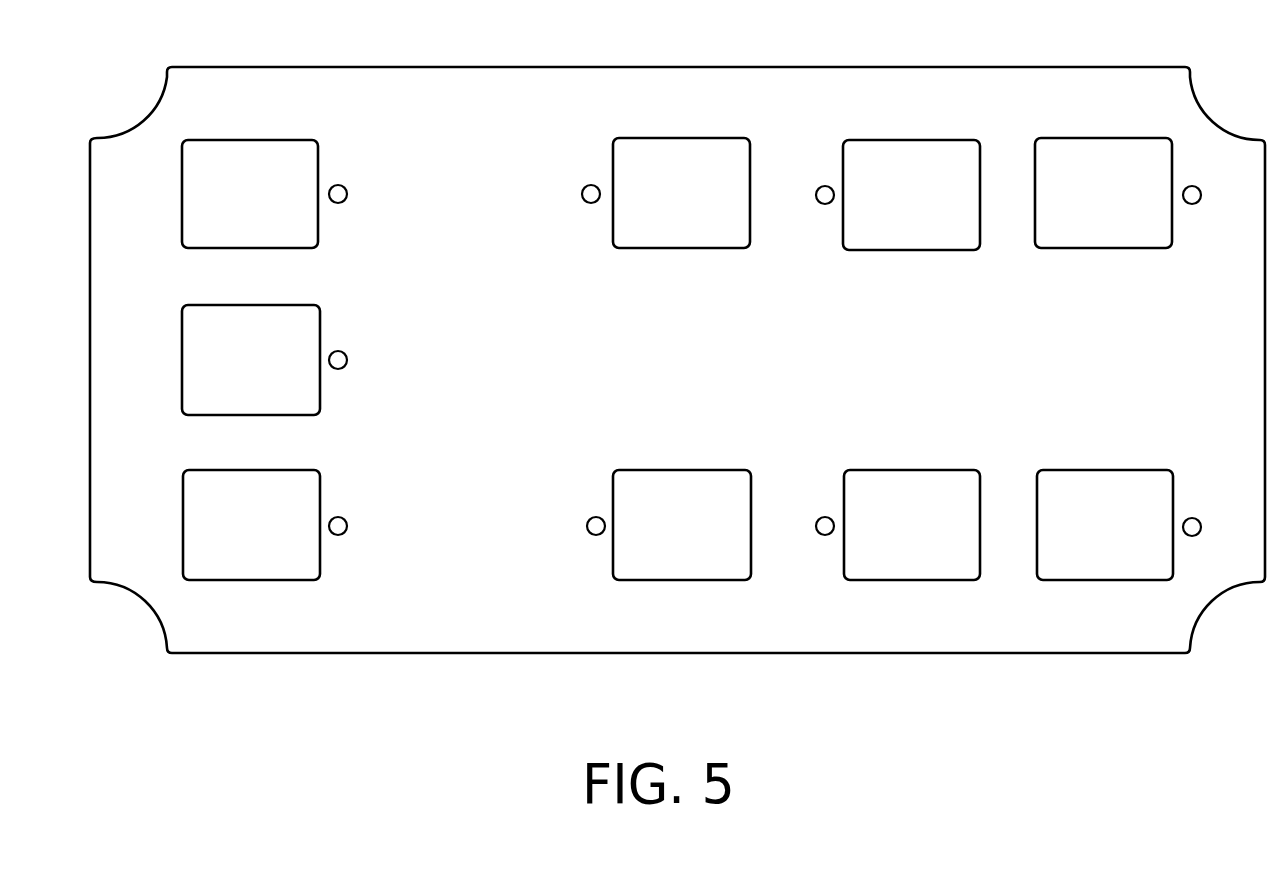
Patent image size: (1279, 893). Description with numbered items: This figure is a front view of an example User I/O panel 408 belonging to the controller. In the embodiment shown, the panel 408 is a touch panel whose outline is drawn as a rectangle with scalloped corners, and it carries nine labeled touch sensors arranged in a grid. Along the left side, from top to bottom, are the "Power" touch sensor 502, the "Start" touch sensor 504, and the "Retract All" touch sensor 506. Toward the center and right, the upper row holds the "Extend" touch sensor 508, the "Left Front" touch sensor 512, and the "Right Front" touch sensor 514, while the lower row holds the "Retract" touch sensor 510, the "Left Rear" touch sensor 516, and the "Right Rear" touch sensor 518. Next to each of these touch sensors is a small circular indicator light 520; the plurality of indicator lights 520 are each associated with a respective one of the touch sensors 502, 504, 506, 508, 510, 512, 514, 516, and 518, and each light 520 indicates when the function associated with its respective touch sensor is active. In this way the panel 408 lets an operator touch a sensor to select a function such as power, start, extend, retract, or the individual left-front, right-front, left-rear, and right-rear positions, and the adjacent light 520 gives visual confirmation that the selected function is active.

The User I/O panel 408 is at (127, 104).
The "Power" touch sensor 502 is at (182, 195).
The "Start" touch sensor 504 is at (182, 358).
The "Retract All" touch sensor 506 is at (183, 525).
The "Extend" touch sensor 508 is at (677, 248).
The "Retract" touch sensor 510 is at (678, 470).
The "Left Front" touch sensor 512 is at (913, 250).
The "Right Front" touch sensor 514 is at (1100, 248).
The "Left Rear" touch sensor 516 is at (915, 470).
The "Right Rear" touch sensor 518 is at (1100, 470).
The indicator lights 520 is at (347, 194).